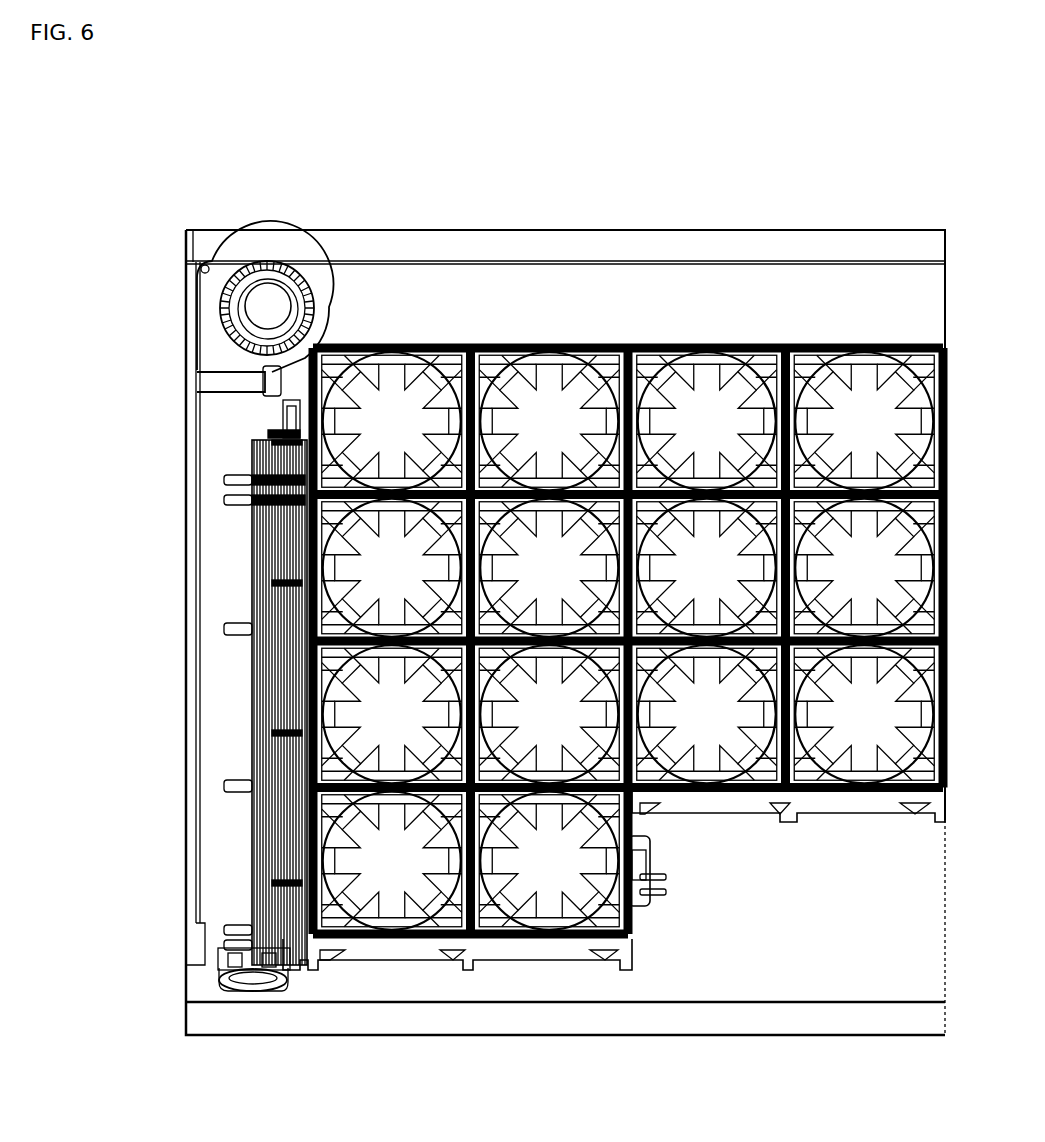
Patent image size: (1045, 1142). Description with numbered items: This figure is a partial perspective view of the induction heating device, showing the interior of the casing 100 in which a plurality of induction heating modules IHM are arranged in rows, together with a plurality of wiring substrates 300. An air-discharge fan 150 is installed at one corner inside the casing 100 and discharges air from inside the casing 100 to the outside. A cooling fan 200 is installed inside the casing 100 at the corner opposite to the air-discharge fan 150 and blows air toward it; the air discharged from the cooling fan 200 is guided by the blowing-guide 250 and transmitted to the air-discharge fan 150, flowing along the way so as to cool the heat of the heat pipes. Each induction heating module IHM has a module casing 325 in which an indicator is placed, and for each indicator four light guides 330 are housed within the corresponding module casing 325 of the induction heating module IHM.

The casing 100 is at (367, 245).
The air-discharge fan 150 is at (243, 262).
The blowing-guide 250 is at (238, 860).
The cooling fan 200 is at (236, 988).
The light guide 330 is at (518, 938).
The module casing 325 is at (581, 939).
The induction heating module IHM is at (633, 937).
The wiring substrate 300 is at (650, 910).